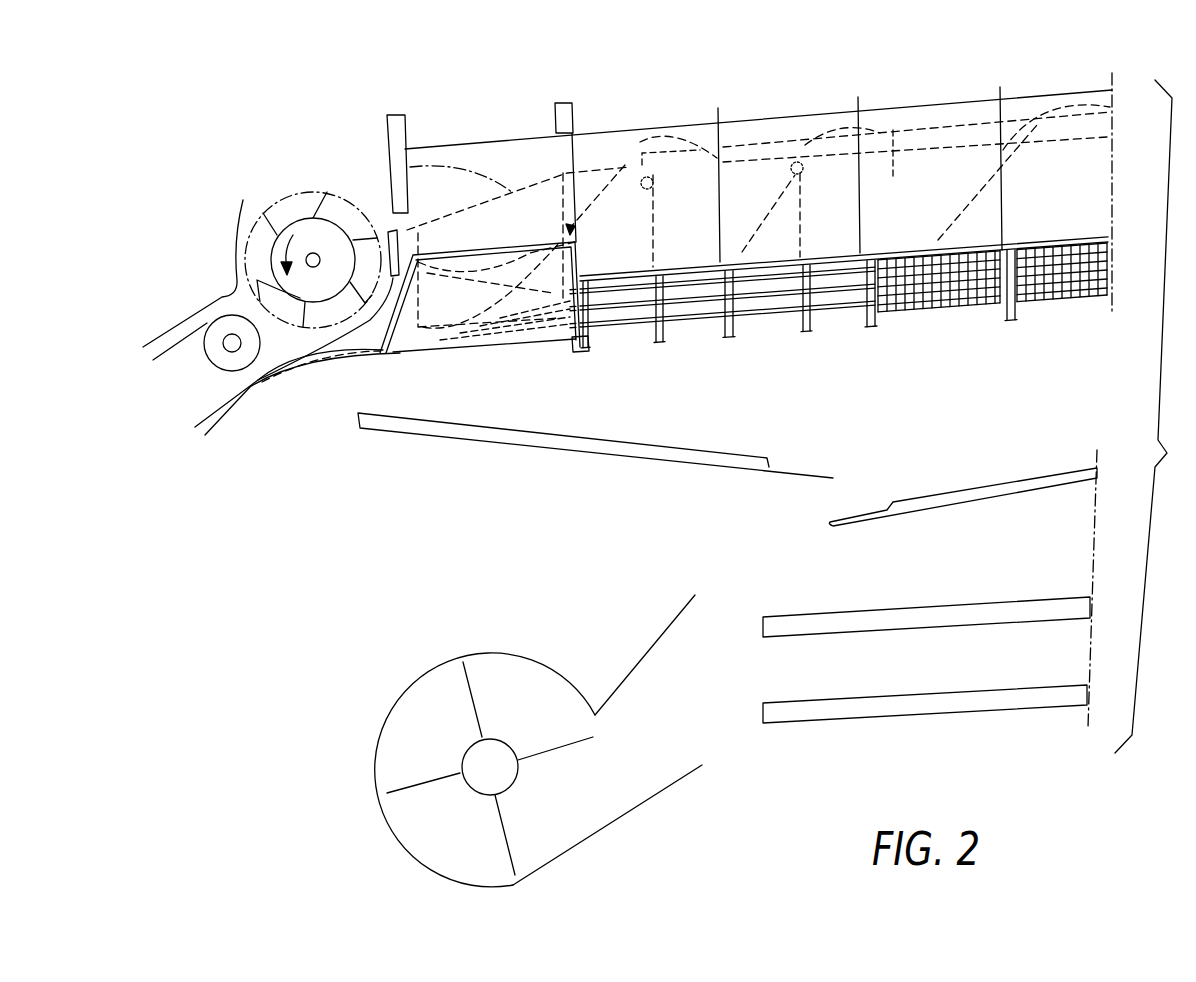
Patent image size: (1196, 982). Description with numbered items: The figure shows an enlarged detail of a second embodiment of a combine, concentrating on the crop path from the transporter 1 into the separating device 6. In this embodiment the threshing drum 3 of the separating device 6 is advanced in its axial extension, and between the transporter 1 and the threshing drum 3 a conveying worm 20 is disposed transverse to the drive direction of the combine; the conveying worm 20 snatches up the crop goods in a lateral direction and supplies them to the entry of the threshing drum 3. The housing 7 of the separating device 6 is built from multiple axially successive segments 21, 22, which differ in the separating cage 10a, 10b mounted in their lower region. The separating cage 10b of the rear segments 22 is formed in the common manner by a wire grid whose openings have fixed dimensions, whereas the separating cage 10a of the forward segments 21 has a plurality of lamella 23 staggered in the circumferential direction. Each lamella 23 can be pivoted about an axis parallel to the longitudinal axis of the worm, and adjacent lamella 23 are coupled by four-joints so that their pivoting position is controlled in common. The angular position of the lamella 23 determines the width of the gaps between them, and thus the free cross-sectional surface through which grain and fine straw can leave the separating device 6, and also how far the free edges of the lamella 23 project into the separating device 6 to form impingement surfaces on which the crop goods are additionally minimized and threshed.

The transporter 1 is at (215, 328).
The conveying worm 20 is at (313, 223).
The threshing drum 3 is at (485, 153).
The housing 7 is at (772, 108).
The forward segments 21 is at (622, 210).
The rear segments 22 is at (1055, 195).
The lamella 23 is at (729, 297).
The separating cage 10a is at (839, 317).
The separating cage 10b is at (992, 300).
The separating device 6 is at (839, 339).